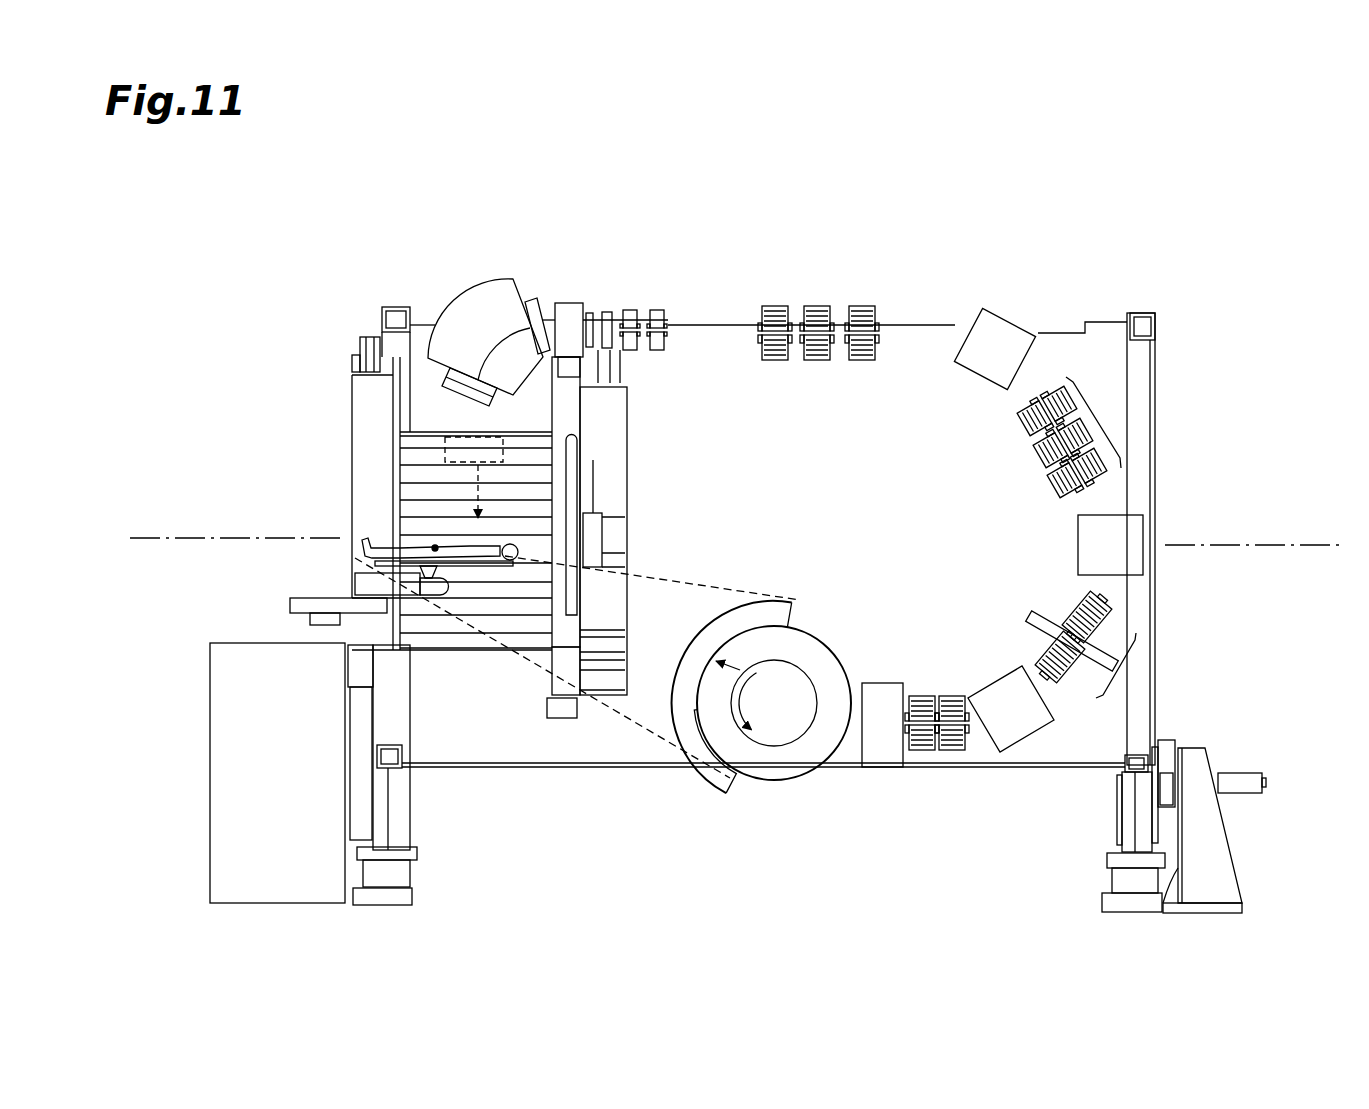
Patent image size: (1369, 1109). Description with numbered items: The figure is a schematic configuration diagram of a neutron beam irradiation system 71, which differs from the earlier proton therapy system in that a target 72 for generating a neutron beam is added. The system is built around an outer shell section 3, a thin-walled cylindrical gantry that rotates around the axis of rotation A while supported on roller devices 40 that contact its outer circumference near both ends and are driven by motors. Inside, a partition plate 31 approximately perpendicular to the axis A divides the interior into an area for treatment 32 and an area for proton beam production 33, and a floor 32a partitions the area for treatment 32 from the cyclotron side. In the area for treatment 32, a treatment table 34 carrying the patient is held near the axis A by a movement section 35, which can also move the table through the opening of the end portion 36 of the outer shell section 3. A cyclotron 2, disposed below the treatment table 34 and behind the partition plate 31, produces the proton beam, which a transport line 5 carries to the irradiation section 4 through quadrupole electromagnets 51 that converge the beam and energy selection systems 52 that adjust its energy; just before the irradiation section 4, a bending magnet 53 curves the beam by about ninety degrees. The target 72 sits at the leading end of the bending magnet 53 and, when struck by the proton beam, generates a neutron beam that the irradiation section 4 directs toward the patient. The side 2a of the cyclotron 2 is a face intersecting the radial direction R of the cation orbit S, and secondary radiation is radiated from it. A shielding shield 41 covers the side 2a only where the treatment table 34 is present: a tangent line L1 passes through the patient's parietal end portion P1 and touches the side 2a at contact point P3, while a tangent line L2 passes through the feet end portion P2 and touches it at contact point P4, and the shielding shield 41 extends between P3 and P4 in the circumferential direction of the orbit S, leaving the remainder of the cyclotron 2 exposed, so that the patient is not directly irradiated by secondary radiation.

The neutron beam irradiation system 71 is at (355, 222).
The axis of rotation A is at (155, 533).
The area for treatment 32 is at (416, 510).
The end portion 36 is at (382, 322).
The irradiation section 4 is at (445, 450).
The bending magnet 53 is at (472, 316).
The target 72 is at (460, 403).
The partition plate 31 is at (562, 457).
The area for proton beam production 33 is at (736, 390).
The treatment table 34 is at (488, 567).
The movement section 35 is at (358, 585).
The floor 32a is at (416, 640).
The roller devices 40 is at (397, 787).
The outer shell section 3 is at (933, 323).
The quadrupole electromagnets 51 is at (878, 300).
The transport line 5 is at (1023, 442).
The energy selection systems 52 is at (1000, 312).
The cyclotron 2 is at (786, 777).
The orbit S is at (762, 677).
The radial direction R is at (740, 670).
The side 2a is at (697, 712).
The shielding shield 41 is at (672, 694).
The contact point P3 is at (806, 600).
The contact point P4 is at (743, 780).
The end portion P1 is at (513, 548).
The end portion P2 is at (355, 561).
The tangent line L1 is at (660, 580).
The tangent line L2 is at (640, 722).